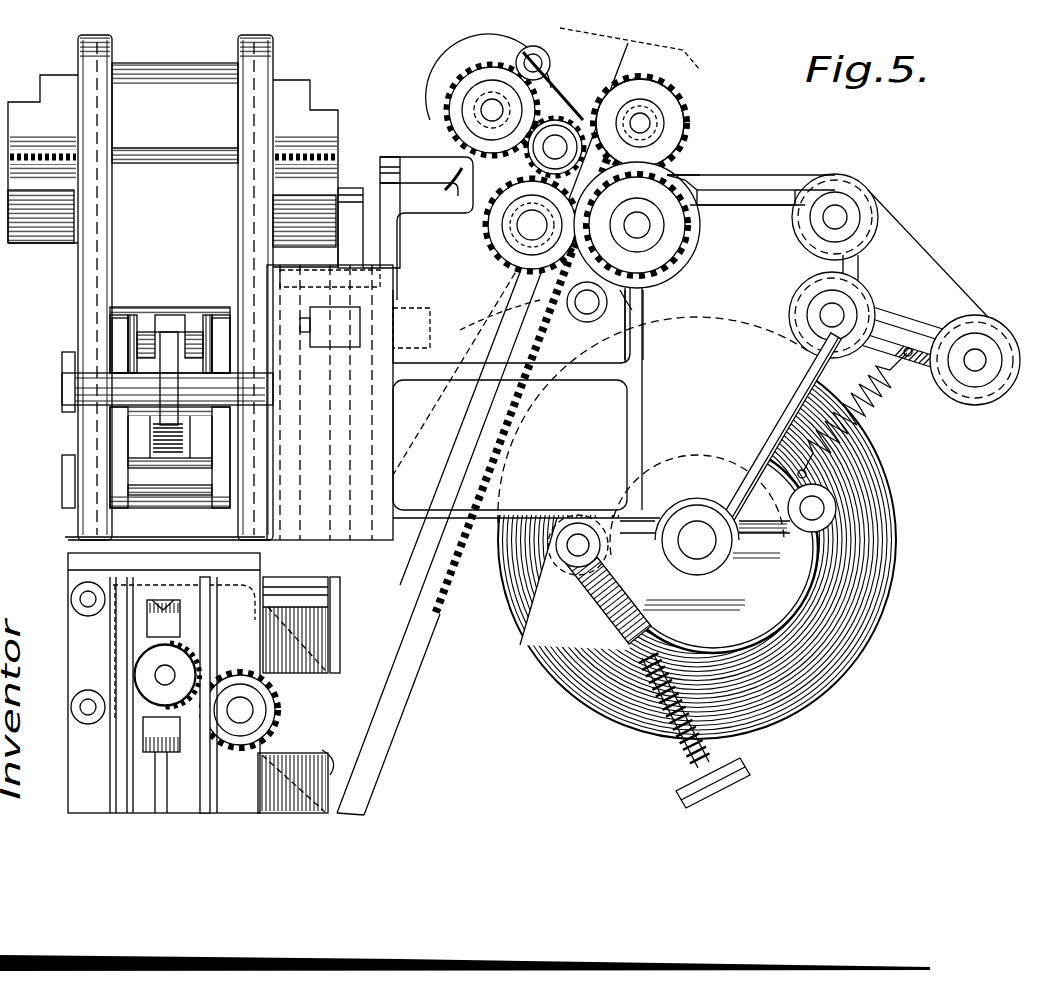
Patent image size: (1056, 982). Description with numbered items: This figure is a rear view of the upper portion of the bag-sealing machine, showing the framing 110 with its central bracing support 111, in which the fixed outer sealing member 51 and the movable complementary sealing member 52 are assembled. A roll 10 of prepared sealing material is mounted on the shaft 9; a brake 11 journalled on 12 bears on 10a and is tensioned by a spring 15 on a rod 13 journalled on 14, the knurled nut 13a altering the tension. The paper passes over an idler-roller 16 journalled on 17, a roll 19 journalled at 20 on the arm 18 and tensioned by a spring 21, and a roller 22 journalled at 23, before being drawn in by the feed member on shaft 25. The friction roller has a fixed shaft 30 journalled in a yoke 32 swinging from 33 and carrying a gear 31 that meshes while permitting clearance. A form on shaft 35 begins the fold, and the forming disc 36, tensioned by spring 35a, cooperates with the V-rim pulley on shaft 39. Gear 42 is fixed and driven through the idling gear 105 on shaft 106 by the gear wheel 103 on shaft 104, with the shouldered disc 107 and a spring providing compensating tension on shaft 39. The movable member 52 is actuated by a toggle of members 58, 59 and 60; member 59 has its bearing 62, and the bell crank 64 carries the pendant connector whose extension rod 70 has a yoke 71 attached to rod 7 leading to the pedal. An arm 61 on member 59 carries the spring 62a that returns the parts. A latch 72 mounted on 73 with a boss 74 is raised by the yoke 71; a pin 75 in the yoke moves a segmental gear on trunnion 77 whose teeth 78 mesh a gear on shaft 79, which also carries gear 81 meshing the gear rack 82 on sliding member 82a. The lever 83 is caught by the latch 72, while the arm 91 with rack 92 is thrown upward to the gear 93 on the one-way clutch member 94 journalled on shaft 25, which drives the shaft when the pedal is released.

The rod 7 is at (165, 795).
The shaft 9 is at (690, 550).
The roll 10 is at (895, 548).
The bearing 10a is at (732, 620).
The brake 11 is at (612, 640).
The brake journal 12 is at (836, 508).
The rod 13 is at (600, 600).
The knurled nut 13a is at (752, 778).
The journal 14 is at (565, 562).
The spring 15 is at (680, 745).
The idler-roller 16 is at (845, 312).
The journal 17 is at (870, 305).
The arm 18 is at (920, 330).
The roll 19 is at (1015, 345).
The journal 20 is at (977, 350).
The spring 21 is at (868, 425).
The roller 22 is at (860, 175).
The journal 23 is at (847, 217).
The shaft 25 is at (650, 225).
The fixed shaft 30 is at (652, 118).
The gear 31 is at (685, 115).
The yoke 32 is at (660, 175).
The pivot 33 is at (545, 55).
The shaft 35 is at (605, 345).
The spring 35a is at (485, 328).
The forming disc 36 is at (445, 185).
The shaft 39 is at (490, 108).
The gear 42 is at (445, 90).
The sealing member 51 is at (338, 118).
The sealing member 52 is at (320, 205).
The toggle member 58 is at (150, 318).
The toggle member 59 is at (128, 313).
The toggle member 60 is at (170, 318).
The arm 61 is at (125, 412).
The bearing 62 is at (62, 378).
The spring 62a is at (150, 435).
The bell crank 64 is at (135, 460).
The extension rod 70 is at (170, 525).
The yoke 71 is at (150, 700).
The latch 72 is at (80, 582).
The latch mount 73 is at (72, 602).
The boss 74 is at (148, 605).
The pin 75 is at (160, 675).
The trunnion 77 is at (72, 707).
The teeth 78 is at (140, 650).
The shaft 79 is at (238, 722).
The gear 81 is at (240, 712).
The gear rack 82 is at (290, 690).
The sliding member 82a is at (300, 710).
The lever 83 is at (340, 735).
The arm 91 is at (438, 548).
The rack 92 is at (590, 322).
The gear 93 is at (650, 280).
The clutch member 94 is at (700, 255).
The gear 103 is at (510, 260).
The shaft 104 is at (495, 235).
The idling gear 105 is at (600, 100).
The shaft 106 is at (630, 49).
The disc 107 is at (503, 240).
The framing 110 is at (80, 48).
The central bracing support 111 is at (182, 82).